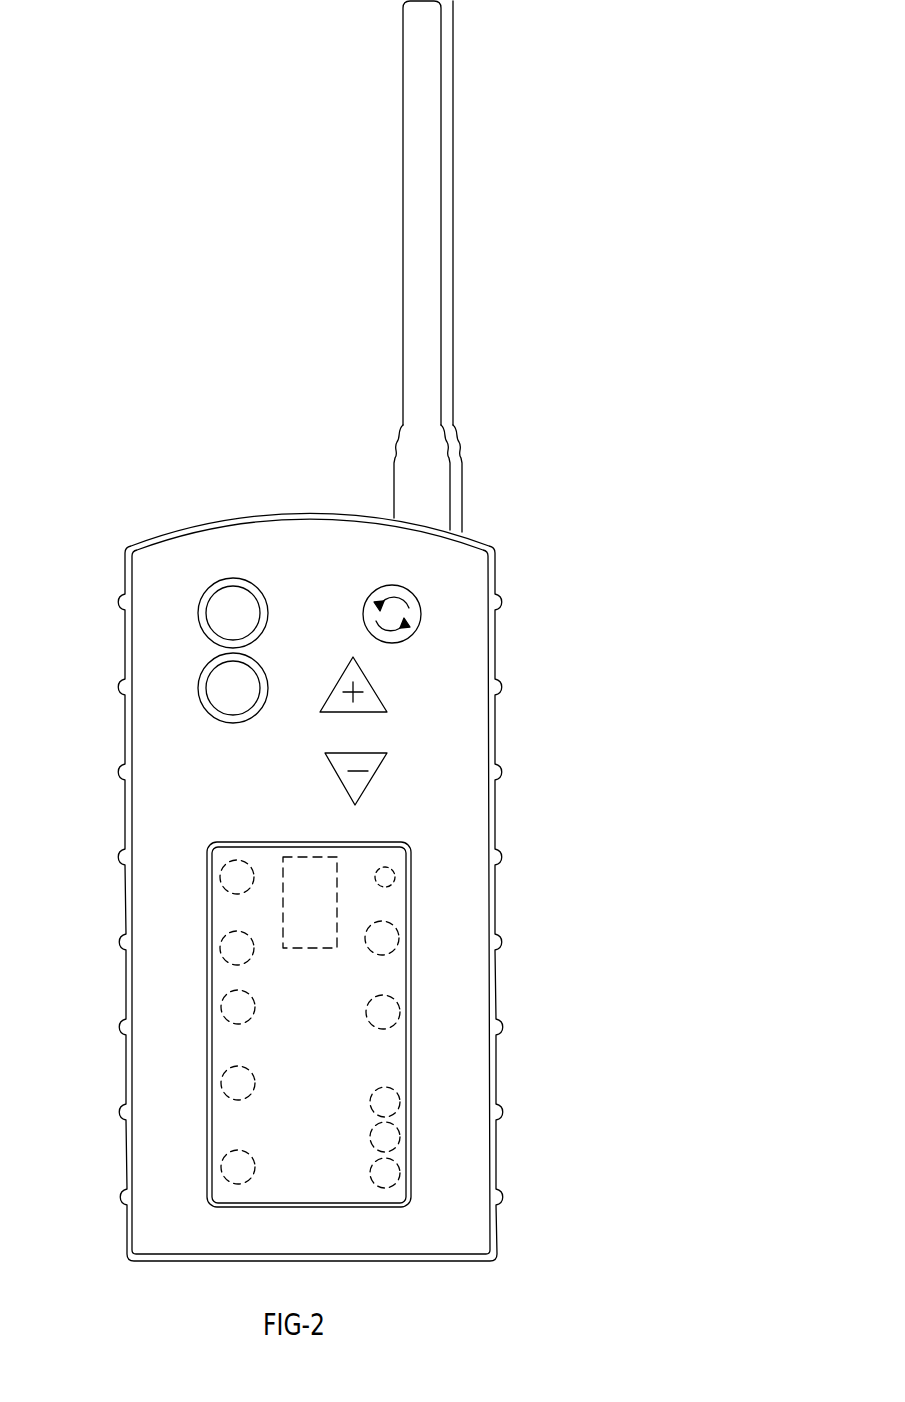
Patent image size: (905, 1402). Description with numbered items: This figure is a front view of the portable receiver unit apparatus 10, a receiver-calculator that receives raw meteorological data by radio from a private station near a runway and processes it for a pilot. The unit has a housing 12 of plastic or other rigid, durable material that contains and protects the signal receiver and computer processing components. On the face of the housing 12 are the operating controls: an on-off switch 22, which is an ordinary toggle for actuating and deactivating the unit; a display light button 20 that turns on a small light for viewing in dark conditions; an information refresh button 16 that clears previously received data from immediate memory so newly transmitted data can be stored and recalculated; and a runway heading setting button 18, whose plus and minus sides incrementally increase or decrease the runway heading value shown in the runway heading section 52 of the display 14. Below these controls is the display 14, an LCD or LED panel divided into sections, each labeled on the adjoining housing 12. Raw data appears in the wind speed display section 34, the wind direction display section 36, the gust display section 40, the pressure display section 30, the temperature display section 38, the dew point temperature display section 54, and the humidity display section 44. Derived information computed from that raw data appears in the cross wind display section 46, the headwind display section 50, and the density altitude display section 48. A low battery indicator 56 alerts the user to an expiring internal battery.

The receiver unit apparatus 10 is at (134, 157).
The housing 12 is at (247, 540).
The display 14 is at (367, 1195).
The information refresh button 16 is at (422, 598).
The runway heading setting button 18 is at (380, 758).
The display light button 20 is at (203, 670).
The on-off switch 22 is at (207, 587).
The pressure display section 30 is at (390, 1025).
The wind speed display section 34 is at (225, 868).
The wind direction display section 36 is at (228, 960).
The temperature display section 38 is at (372, 1110).
The gust display section 40 is at (225, 1017).
The humidity display section 44 is at (398, 1182).
The cross wind display section 46 is at (223, 1093).
The density altitude display section 48 is at (390, 950).
The headwind display section 50 is at (223, 1175).
The runway heading section 52 is at (277, 858).
The dew point temperature display section 54 is at (373, 1145).
The low battery indicator 56 is at (392, 872).